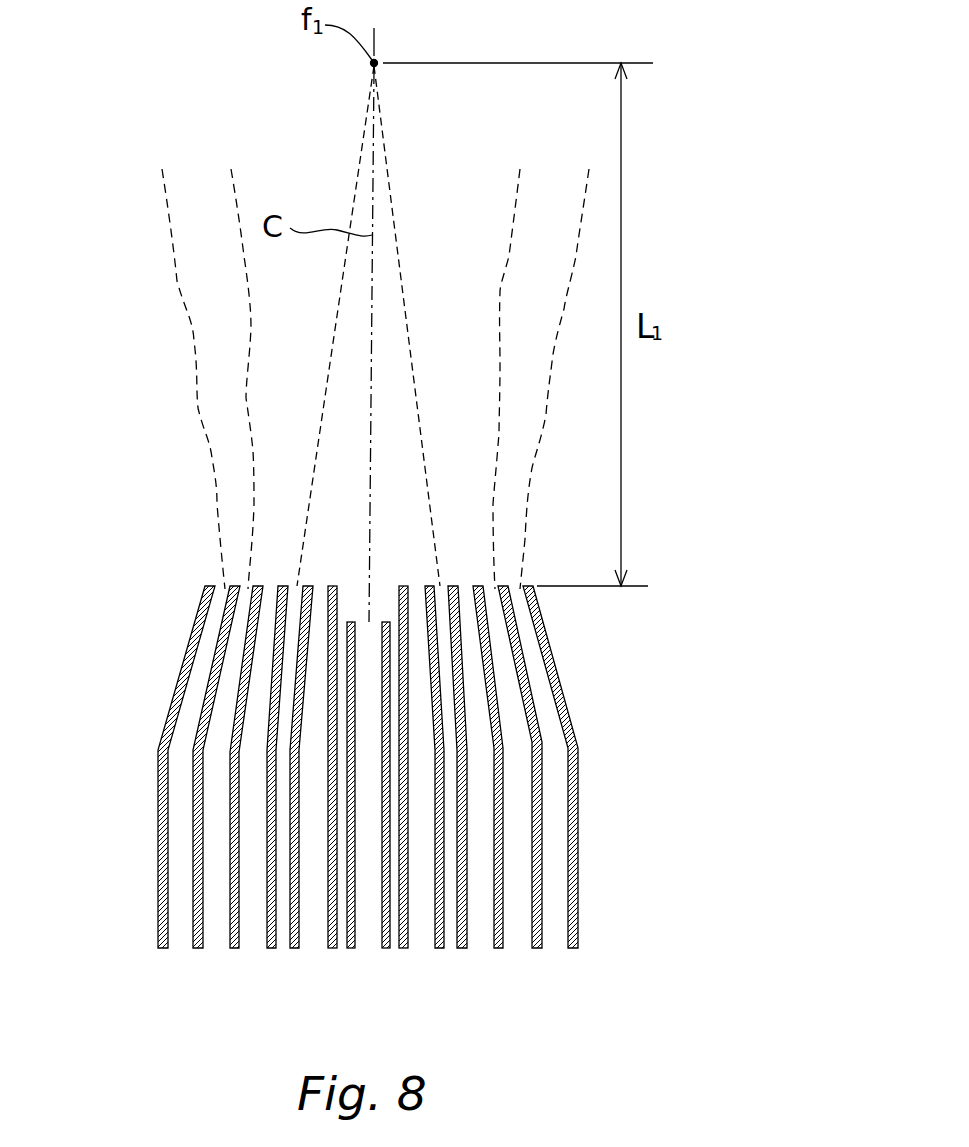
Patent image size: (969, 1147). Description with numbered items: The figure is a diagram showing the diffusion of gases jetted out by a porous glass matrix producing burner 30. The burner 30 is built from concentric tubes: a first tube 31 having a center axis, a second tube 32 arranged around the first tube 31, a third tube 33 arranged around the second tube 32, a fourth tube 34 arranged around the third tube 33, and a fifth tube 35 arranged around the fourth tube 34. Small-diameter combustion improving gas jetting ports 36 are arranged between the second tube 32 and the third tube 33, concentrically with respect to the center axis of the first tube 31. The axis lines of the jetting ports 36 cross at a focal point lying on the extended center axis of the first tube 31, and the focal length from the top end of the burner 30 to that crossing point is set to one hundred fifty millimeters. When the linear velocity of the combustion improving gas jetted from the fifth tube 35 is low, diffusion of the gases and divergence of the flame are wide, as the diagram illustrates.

The porous glass matrix producing burner 30 is at (155, 658).
The first tube 31 is at (350, 949).
The second tube 32 is at (386, 949).
The third tube 33 is at (499, 949).
The fourth tube 34 is at (541, 935).
The fifth tube 35 is at (578, 905).
The small-diameter combustion improving gas jetting ports 36 is at (296, 949).